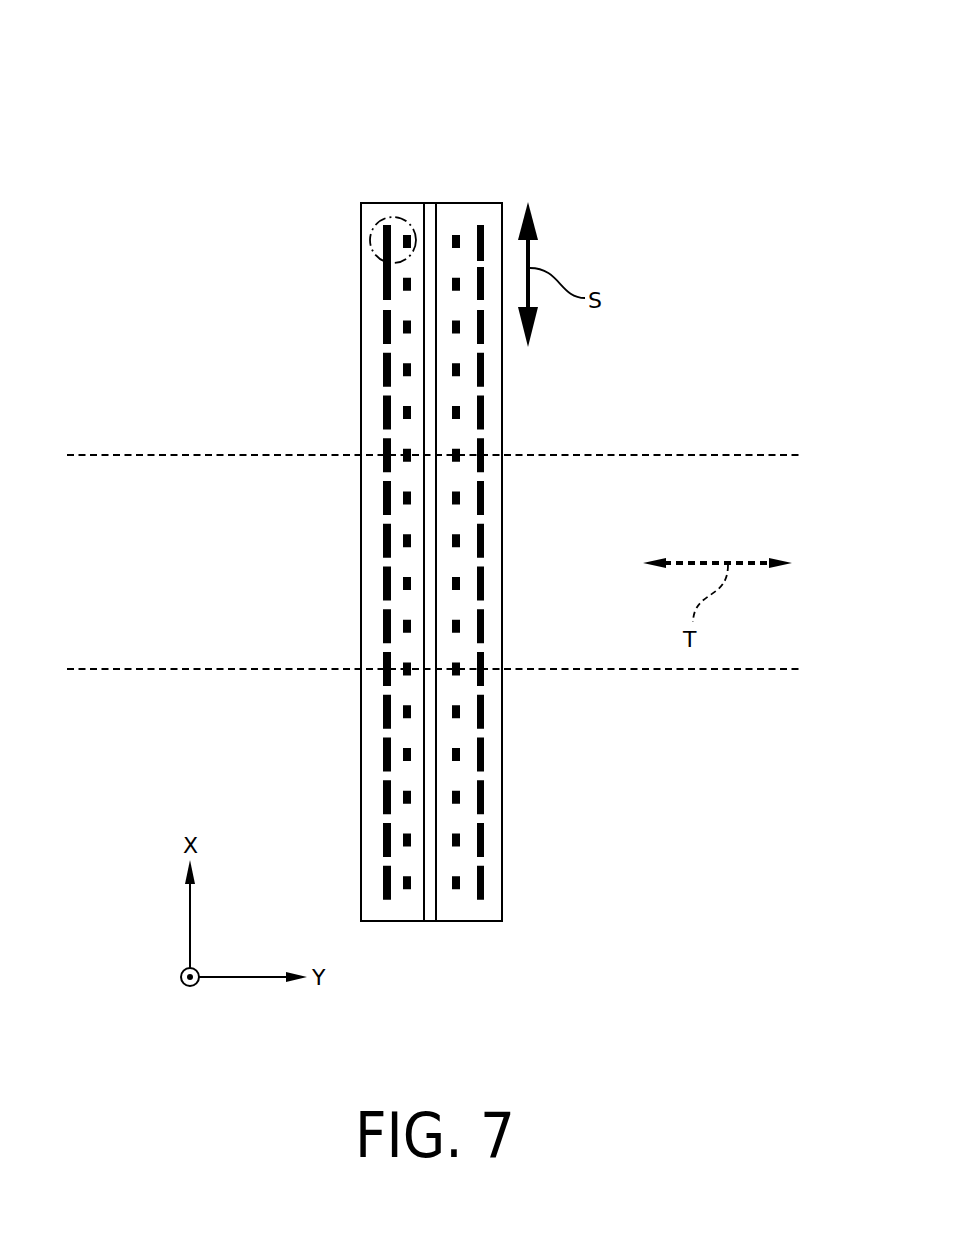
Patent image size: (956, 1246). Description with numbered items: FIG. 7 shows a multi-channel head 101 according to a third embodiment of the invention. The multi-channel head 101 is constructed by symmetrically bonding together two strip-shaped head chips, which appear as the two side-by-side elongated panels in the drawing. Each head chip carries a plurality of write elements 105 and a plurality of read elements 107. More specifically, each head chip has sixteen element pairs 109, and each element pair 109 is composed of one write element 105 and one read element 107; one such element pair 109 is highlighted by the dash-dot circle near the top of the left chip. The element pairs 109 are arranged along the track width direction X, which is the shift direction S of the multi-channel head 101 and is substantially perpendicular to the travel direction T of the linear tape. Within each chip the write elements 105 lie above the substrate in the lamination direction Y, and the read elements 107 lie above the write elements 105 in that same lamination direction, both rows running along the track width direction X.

The multi-channel head 101 is at (235, 48).
The write element 105 is at (382, 242).
The read element 107 is at (407, 238).
The element pair 109 is at (373, 227).